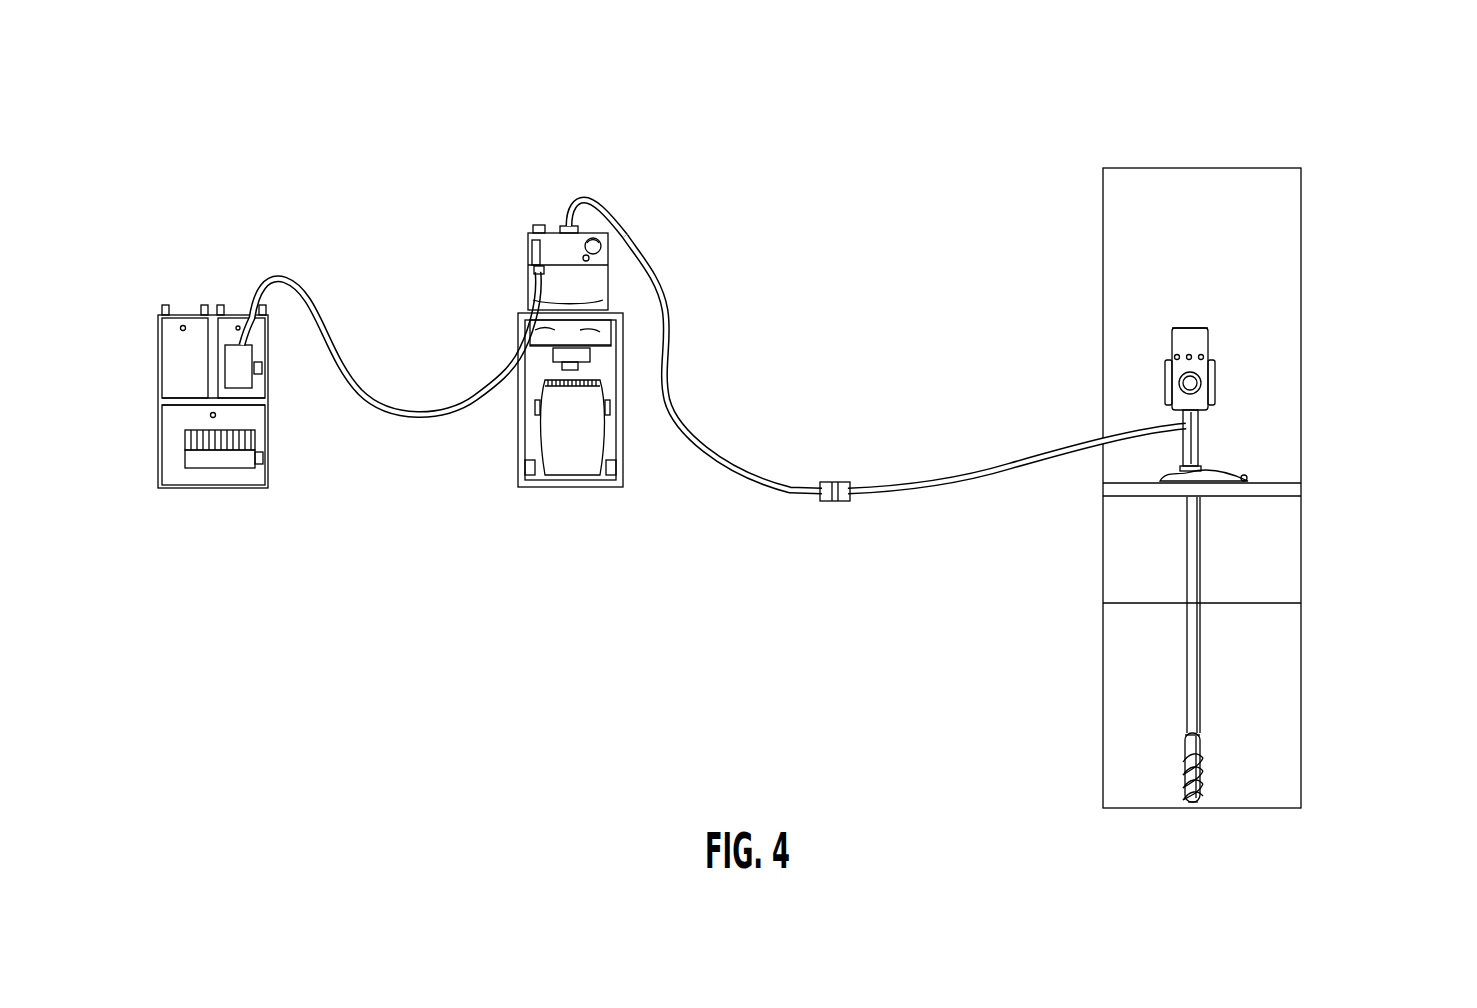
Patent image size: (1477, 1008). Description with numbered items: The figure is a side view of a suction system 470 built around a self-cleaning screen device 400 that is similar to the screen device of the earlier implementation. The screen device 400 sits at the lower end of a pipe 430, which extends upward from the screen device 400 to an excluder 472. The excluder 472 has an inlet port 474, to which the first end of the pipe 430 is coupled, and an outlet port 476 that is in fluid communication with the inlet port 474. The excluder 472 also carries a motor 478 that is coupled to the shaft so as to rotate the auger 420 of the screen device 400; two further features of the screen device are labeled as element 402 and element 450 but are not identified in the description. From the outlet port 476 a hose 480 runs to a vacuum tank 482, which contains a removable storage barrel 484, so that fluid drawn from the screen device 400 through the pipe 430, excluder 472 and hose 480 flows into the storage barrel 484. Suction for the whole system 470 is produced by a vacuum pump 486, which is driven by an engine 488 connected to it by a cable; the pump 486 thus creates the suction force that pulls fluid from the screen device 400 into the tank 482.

The suction system 470 is at (1350, 103).
The vacuum pump 486 is at (196, 294).
The engine 488 is at (186, 463).
The vacuum tank 482 is at (503, 236).
The storage barrel 484 is at (520, 454).
The hose 480 is at (904, 497).
The excluder 472 is at (1218, 383).
The motor 478 is at (1196, 326).
The outlet port 476 is at (1184, 422).
The inlet port 474 is at (1202, 468).
The pipe 430 is at (1204, 595).
The self-cleaning screen device 400 is at (1216, 748).
The tip shoulder 402 is at (1181, 740).
The auger 420 is at (1180, 777).
The tip end / outlet 450 is at (1203, 804).